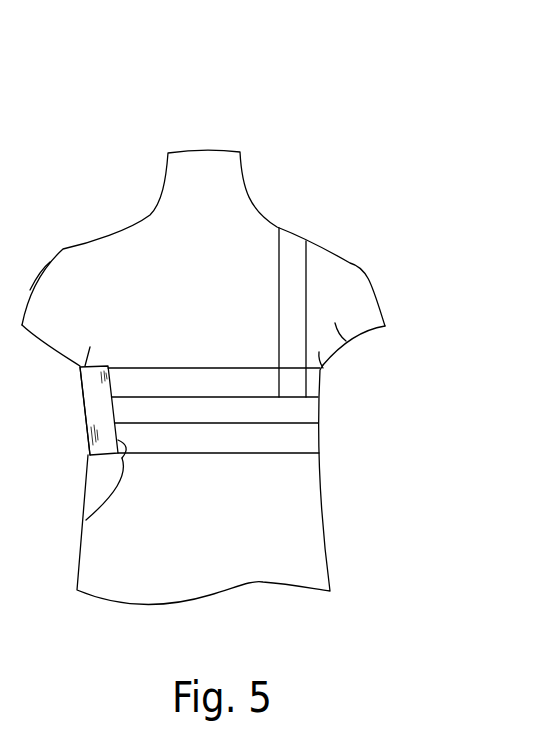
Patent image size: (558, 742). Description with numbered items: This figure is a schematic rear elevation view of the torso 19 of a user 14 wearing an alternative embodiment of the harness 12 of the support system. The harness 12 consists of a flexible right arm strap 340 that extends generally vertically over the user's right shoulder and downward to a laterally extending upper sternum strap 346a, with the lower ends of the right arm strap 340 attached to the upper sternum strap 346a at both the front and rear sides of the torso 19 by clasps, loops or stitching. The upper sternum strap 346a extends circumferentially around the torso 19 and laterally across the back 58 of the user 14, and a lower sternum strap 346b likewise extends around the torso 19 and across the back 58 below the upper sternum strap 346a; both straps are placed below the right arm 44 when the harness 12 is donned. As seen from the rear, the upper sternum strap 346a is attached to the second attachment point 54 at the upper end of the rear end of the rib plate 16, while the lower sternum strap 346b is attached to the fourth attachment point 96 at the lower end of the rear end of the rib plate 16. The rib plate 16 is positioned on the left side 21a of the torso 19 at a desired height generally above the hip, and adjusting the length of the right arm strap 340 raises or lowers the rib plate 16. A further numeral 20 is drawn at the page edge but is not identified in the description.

The user 14 is at (262, 98).
The harness 12 is at (332, 249).
The torso 19 is at (95, 228).
The sleeve portion 20 is at (40, 300).
The right arm 44 is at (345, 338).
The right arm strap 340 is at (293, 250).
The upper sternum strap 346a is at (318, 386).
The lower sternum strap 346b is at (306, 441).
The second attachment point 54 is at (115, 388).
The rib plate 16 is at (83, 417).
The left side 21a is at (103, 467).
The fourth attachment point 96 is at (90, 512).
The back 58 is at (210, 481).